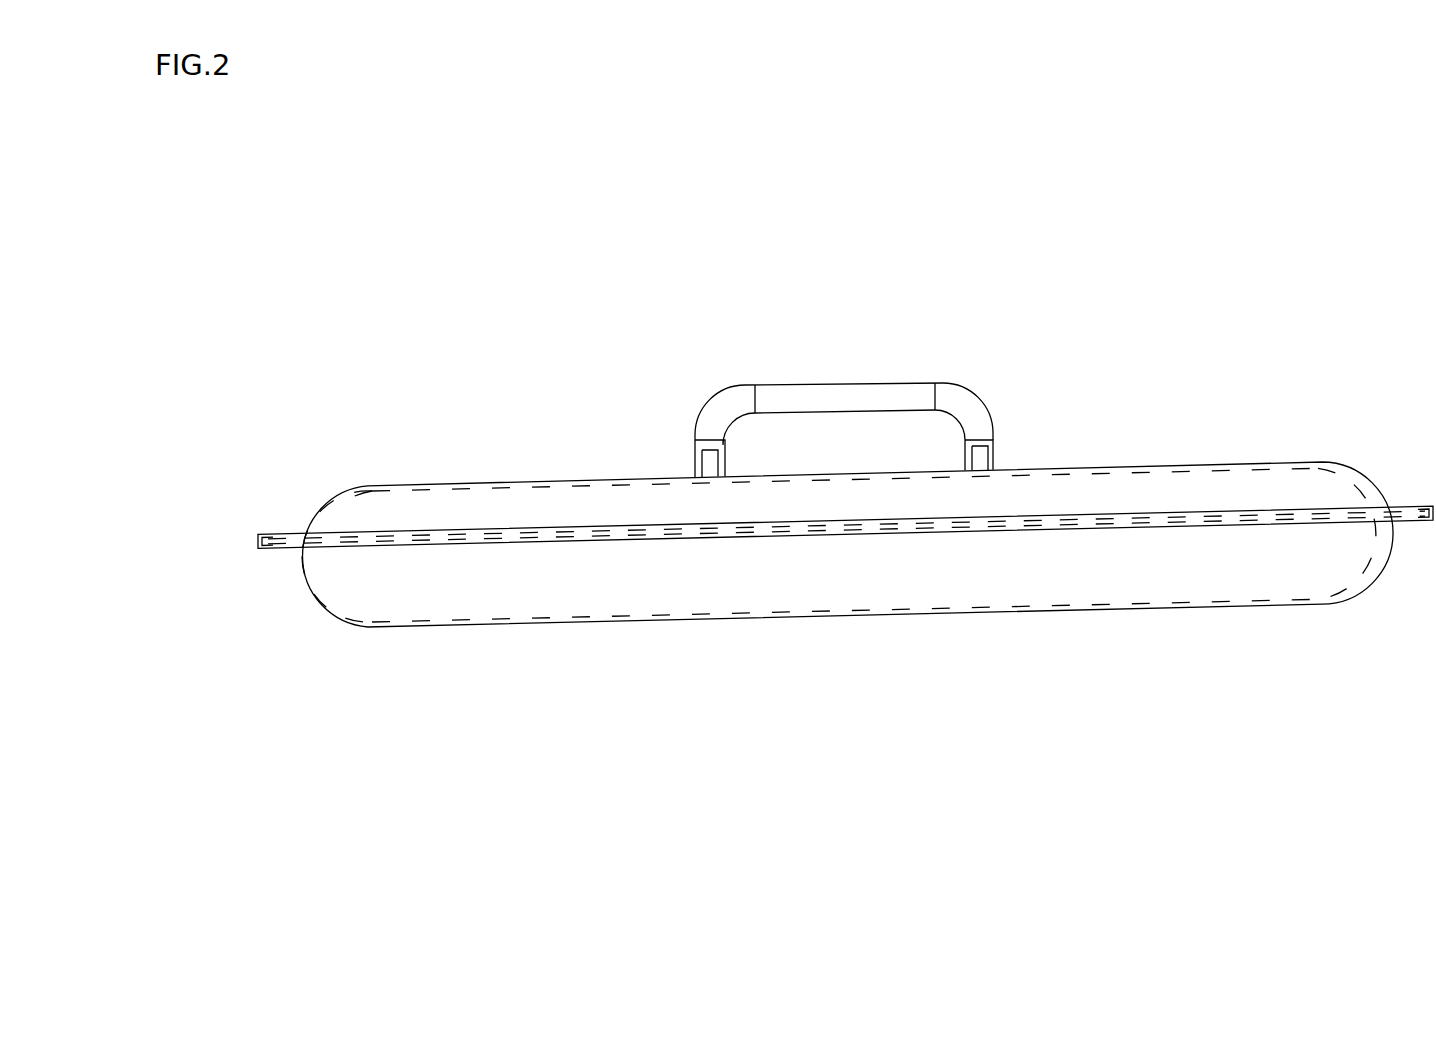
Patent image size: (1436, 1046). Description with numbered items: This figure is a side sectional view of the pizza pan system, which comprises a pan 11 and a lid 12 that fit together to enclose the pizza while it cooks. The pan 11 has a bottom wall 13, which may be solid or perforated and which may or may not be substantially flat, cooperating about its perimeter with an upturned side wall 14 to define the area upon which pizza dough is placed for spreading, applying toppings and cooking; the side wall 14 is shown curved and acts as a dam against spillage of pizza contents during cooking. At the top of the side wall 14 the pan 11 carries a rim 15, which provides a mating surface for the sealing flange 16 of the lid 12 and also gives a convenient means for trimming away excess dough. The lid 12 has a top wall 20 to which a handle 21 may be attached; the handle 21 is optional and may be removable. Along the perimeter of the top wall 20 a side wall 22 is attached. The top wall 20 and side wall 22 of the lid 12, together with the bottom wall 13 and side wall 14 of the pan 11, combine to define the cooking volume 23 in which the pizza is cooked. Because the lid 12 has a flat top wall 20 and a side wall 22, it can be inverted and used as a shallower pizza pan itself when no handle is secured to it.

The pan 11 is at (460, 678).
The lid 12 is at (408, 448).
The bottom wall 13 is at (1000, 612).
The side wall 14 is at (320, 605).
The rim 15 is at (257, 551).
The sealing flange 16 is at (270, 538).
The top wall 20 is at (1122, 470).
The handle 21 is at (870, 382).
The side wall 22 is at (325, 505).
The cooking volume 23 is at (642, 583).